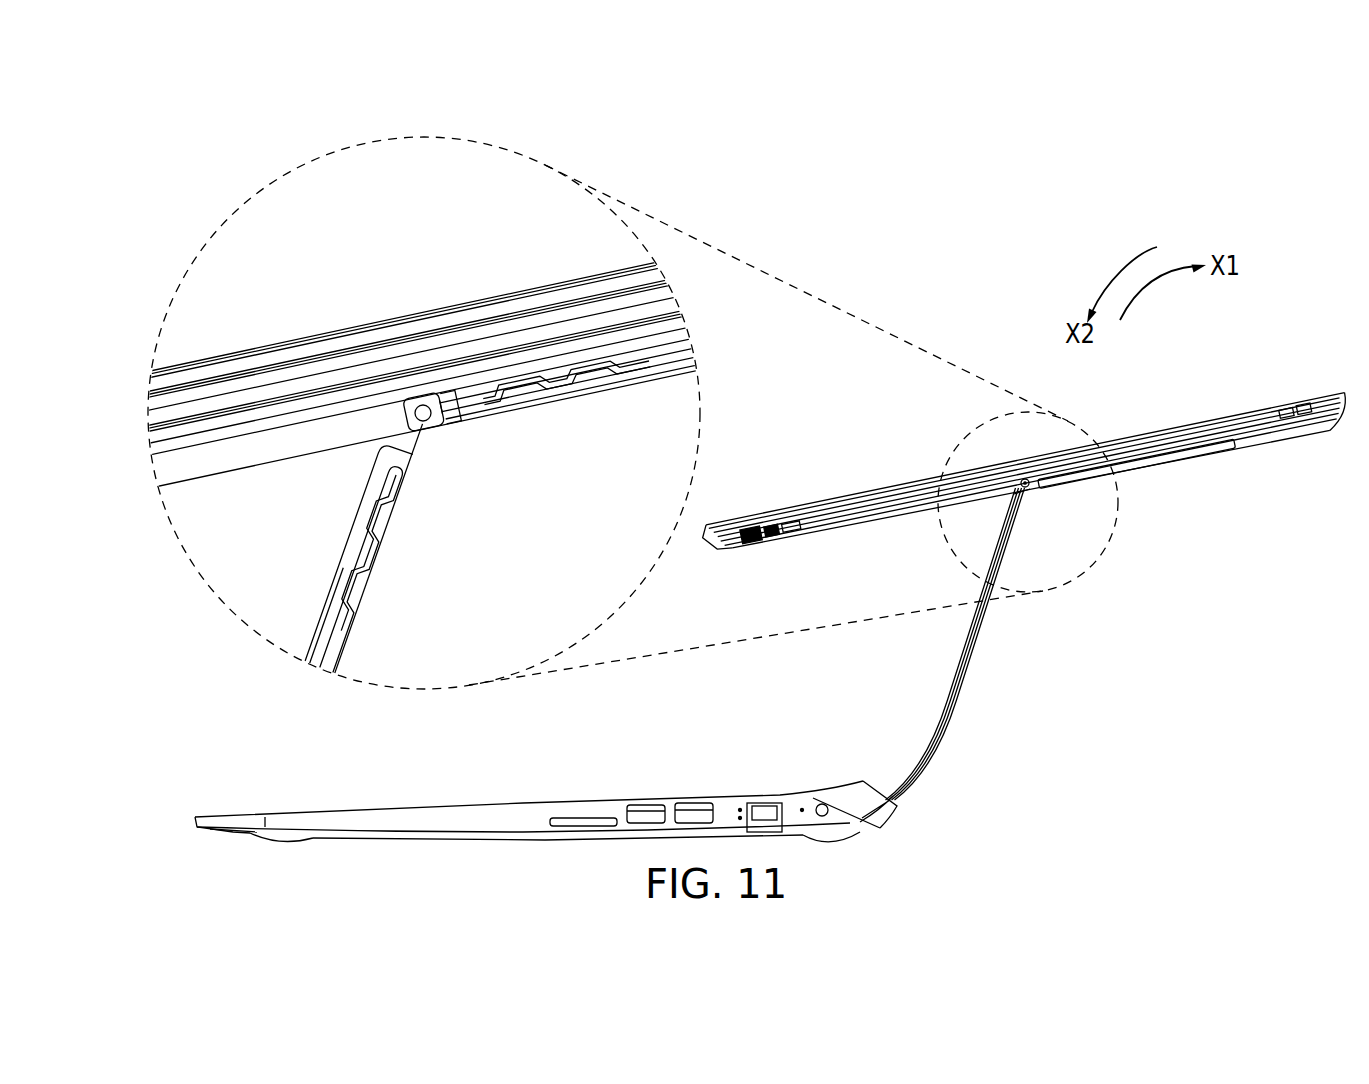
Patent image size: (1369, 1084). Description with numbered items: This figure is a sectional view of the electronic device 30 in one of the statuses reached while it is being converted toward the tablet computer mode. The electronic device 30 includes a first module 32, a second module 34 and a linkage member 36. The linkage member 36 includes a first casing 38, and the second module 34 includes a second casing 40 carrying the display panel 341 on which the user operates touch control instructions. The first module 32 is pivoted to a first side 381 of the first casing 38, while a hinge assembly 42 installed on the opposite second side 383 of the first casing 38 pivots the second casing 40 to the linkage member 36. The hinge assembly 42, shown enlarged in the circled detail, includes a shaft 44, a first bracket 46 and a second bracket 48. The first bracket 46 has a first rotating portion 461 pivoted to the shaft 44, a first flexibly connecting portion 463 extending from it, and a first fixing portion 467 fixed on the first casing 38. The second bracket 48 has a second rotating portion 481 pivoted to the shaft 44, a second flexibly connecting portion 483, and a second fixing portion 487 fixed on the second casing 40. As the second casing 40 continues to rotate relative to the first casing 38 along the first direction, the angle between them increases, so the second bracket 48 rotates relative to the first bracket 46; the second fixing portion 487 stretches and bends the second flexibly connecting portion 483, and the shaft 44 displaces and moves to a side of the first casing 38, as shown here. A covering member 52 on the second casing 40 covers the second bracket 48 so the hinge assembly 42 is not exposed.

The electronic device 30 is at (186, 142).
The first module 32 is at (280, 798).
The second module 34 is at (1248, 384).
The display panel 341 is at (1325, 405).
The linkage member 36 is at (1005, 649).
The first casing 38 is at (963, 673).
The first side 381 is at (905, 803).
The second side 383 is at (1030, 488).
The second casing 40 is at (1318, 415).
The hinge assembly 42 is at (1092, 498).
The shaft 44 is at (423, 405).
The first bracket 46 is at (342, 470).
The first rotating portion 461 is at (440, 417).
The first flexibly connecting portion 463 is at (383, 492).
The first fixing portion 467 is at (337, 617).
The second bracket 48 is at (570, 345).
The second rotating portion 481 is at (415, 430).
The second flexibly connecting portion 483 is at (547, 392).
The second fixing portion 487 is at (678, 358).
The covering member 52 is at (1218, 445).